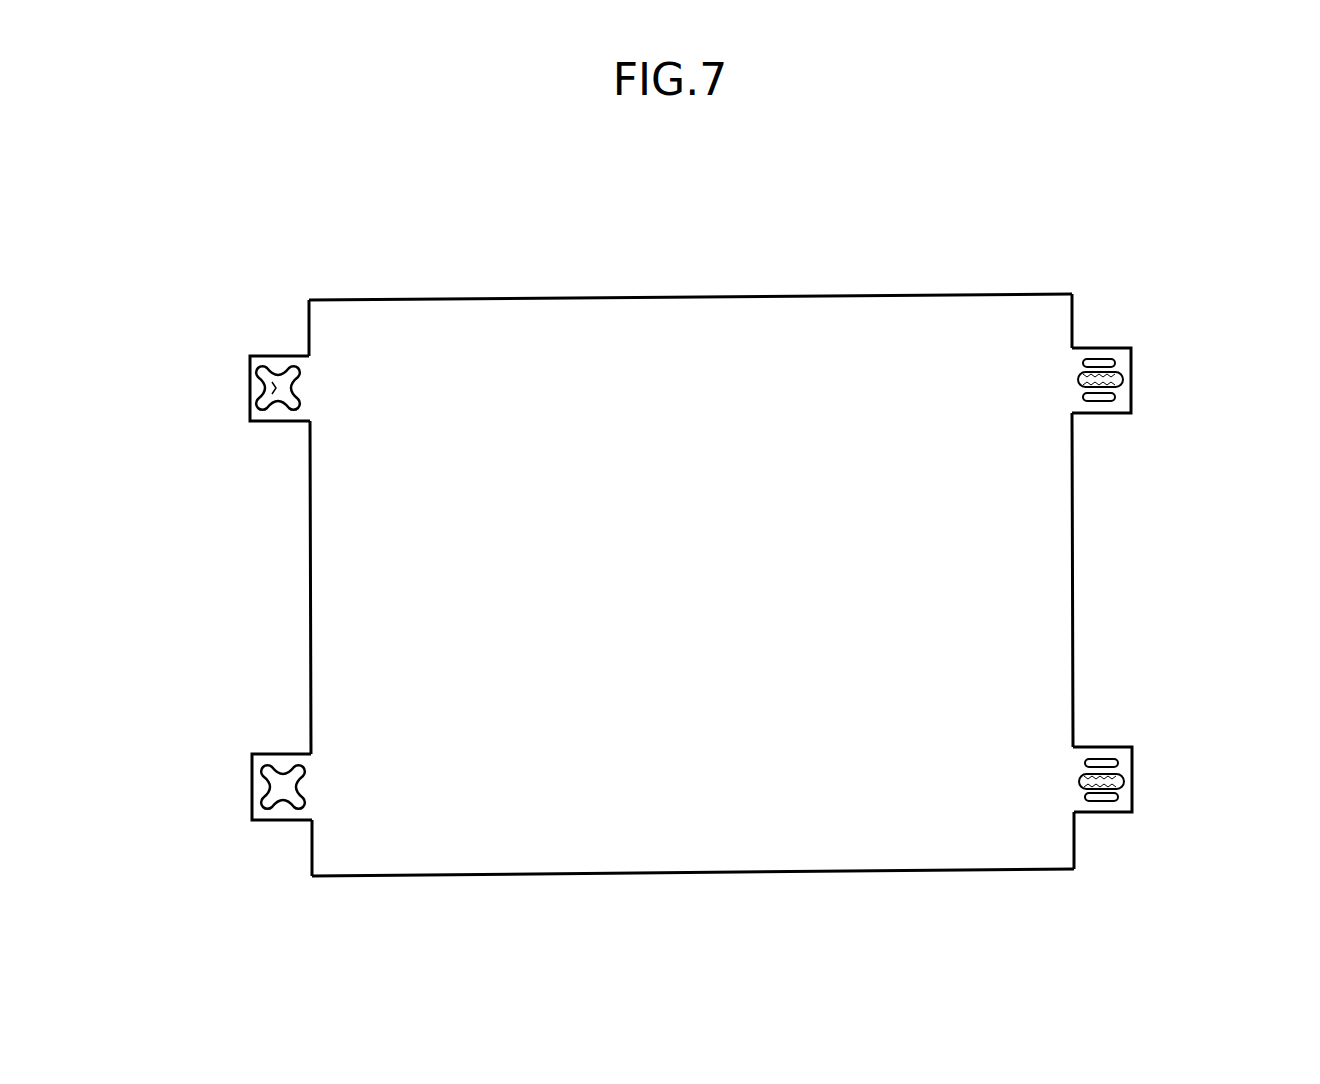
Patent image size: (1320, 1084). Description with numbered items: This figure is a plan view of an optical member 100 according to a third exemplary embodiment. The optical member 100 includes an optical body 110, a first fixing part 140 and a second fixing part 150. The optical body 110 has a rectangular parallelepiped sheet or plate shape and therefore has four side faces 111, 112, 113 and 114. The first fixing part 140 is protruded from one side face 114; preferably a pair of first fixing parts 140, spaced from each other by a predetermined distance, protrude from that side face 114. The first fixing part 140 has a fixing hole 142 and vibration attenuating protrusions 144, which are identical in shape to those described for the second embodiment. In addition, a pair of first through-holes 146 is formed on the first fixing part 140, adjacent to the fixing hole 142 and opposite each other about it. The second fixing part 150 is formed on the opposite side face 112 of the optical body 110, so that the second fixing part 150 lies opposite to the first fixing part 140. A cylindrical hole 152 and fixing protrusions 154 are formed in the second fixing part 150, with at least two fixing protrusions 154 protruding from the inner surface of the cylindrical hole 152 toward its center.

The optical member 100 is at (1052, 250).
The optical body 110 is at (895, 312).
The side face 111 is at (738, 297).
The side face 112 is at (311, 660).
The side face 113 is at (742, 874).
The side face 114 is at (1074, 545).
The first fixing part 140 is at (1142, 389).
The fixing hole 142 is at (1105, 364).
The vibration attenuating protrusions 144 is at (1120, 378).
The first through-hole 146 is at (1105, 402).
The second fixing part 150 is at (236, 422).
The cylindrical hole 152 is at (268, 386).
The fixing protrusions 154 is at (282, 376).